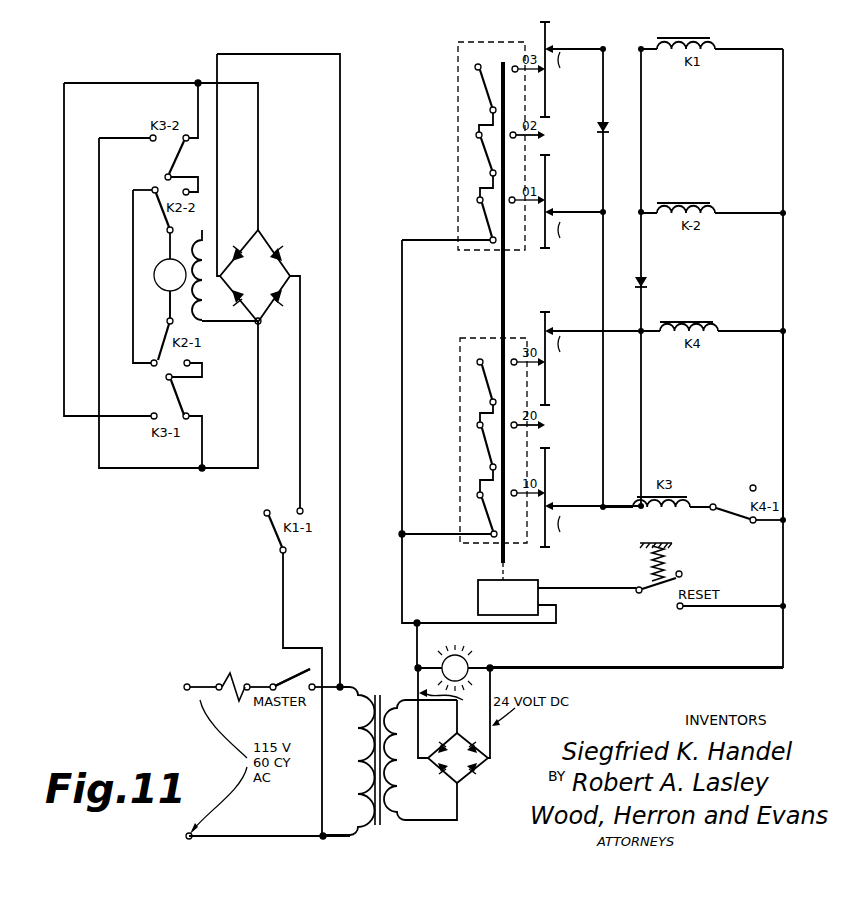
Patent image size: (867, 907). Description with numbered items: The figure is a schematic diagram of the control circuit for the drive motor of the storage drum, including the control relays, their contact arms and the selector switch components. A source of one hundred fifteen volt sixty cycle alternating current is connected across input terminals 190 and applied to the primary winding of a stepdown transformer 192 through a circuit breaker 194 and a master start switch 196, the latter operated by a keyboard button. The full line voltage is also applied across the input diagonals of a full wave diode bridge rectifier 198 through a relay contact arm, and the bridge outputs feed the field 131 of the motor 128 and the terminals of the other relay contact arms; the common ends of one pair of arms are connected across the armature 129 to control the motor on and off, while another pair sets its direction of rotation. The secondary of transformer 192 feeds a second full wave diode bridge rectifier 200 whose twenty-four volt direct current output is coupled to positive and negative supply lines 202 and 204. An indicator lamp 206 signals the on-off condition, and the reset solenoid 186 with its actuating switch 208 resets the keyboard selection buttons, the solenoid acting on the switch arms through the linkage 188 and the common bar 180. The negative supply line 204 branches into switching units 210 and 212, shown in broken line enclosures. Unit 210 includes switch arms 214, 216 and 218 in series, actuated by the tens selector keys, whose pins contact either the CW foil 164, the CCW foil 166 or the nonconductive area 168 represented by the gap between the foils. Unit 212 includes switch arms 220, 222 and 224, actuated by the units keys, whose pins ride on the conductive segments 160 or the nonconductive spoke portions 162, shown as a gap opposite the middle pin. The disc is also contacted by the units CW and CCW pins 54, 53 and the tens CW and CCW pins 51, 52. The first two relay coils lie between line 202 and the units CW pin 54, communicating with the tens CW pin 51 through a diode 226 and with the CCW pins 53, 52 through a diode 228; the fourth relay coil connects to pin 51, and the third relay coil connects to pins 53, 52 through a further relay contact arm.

The drive motor 128 is at (182, 256).
The armature 129 is at (165, 292).
The field 131 is at (203, 292).
The full wave diode bridge rectifier 198 is at (268, 304).
The bus bar 180 is at (503, 62).
The switching unit 212 is at (452, 154).
The switch arm 224 is at (480, 98).
The switch arm 222 is at (480, 164).
The switch arm 220 is at (449, 220).
The switching unit 210 is at (455, 452).
The switch arm 218 is at (480, 390).
The switch arm 216 is at (480, 457).
The switch arm 214 is at (449, 514).
The conductive segments 160 is at (548, 108).
The spoke portions 162 is at (547, 148).
The CW foil 164 is at (548, 393).
The nonconductive area 168 is at (547, 438).
The CCW foil 166 is at (548, 468).
The units CW pin 54 is at (574, 61).
The units CCW pin 53 is at (574, 231).
The tens CW pin 51 is at (593, 343).
The tens CCW pin 52 is at (593, 526).
The diode 228 is at (612, 128).
The diode 226 is at (650, 289).
The negative supply line 204 is at (402, 447).
The positive supply line 202 is at (783, 423).
The linkage 188 is at (516, 571).
The reset solenoid 186 is at (476, 604).
The actuating switch 208 is at (663, 600).
The indicator lamp 206 is at (473, 655).
The full wave diode bridge rectifier 200 is at (463, 777).
The stepdown transformer 192 is at (380, 690).
The circuit breaker 194 is at (237, 675).
The master start switch 196 is at (293, 673).
The input terminals 190 is at (186, 690).